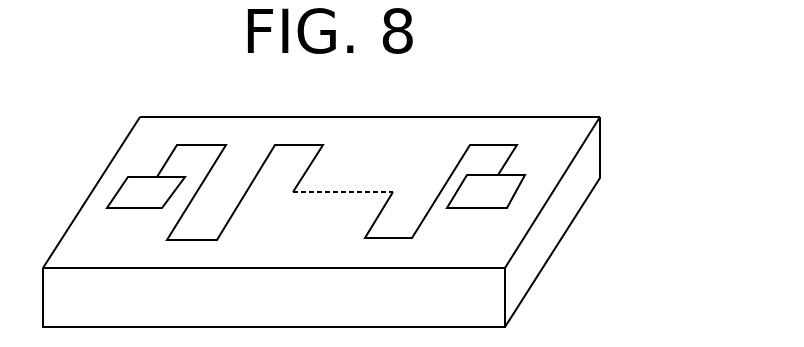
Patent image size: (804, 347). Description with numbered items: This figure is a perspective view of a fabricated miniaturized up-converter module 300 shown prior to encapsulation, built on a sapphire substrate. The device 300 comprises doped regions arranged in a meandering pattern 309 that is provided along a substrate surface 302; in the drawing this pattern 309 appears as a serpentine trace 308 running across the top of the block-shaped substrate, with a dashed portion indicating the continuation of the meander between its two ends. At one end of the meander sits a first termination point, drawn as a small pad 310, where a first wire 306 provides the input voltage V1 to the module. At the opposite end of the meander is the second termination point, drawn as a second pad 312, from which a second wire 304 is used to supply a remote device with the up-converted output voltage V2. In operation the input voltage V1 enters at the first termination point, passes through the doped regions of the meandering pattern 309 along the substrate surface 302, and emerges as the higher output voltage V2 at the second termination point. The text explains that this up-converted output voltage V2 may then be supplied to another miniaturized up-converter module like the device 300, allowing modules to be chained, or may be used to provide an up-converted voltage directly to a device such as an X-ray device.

The miniaturized up-converter module 300 is at (547, 62).
The substrate surface 302 is at (558, 245).
The second wire 304 is at (562, 143).
The first wire 306 is at (93, 142).
The serpentine resistive trace 308 is at (208, 240).
The meandering pattern 309 is at (417, 130).
The first contact pad 310 is at (145, 210).
The second contact pad 312 is at (483, 208).
The input voltage V1 is at (117, 188).
The up-converted output voltage V2 is at (484, 194).